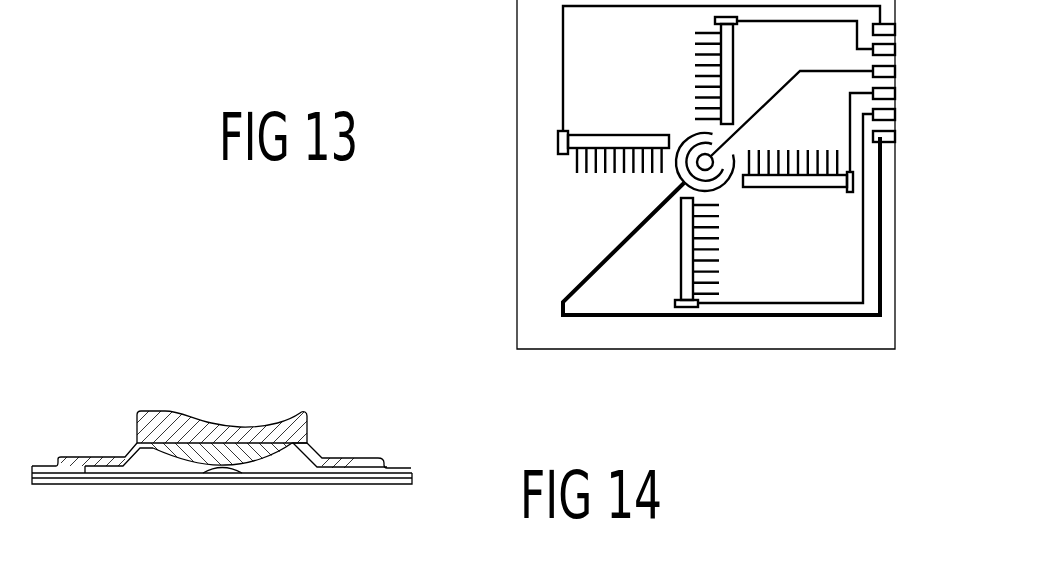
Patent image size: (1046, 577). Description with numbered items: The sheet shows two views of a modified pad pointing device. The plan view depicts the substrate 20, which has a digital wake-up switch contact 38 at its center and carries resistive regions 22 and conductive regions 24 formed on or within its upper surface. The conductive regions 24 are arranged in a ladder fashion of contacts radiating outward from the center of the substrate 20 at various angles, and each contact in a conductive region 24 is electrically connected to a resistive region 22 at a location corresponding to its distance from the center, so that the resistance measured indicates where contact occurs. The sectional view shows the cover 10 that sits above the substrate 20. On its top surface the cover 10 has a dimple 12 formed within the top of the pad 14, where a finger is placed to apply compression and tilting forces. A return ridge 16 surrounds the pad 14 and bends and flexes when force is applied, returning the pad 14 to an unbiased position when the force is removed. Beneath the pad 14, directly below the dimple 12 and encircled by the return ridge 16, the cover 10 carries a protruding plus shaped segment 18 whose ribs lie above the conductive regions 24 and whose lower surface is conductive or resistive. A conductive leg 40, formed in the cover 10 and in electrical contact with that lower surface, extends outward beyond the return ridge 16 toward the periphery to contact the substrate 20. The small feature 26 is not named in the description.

In FIG. 14, the cover 10 is at (63, 457).
In FIG. 14, the dimple 12 is at (180, 417).
In FIG. 14, the pad 14 is at (305, 415).
In FIG. 14, the return ridge 16 is at (317, 452).
In FIG. 14, the protruding plus shaped segment 18 is at (167, 455).
In FIG. 13, the substrate 20 is at (517, 75).
In FIG. 14, the substrate 20 is at (412, 477).
In FIG. 13, the resistive region 22 is at (628, 145).
In FIG. 13, the conductive region 24 is at (577, 163).
In FIG. 14, the dimple 26 is at (222, 472).
In FIG. 13, the digital wake-up switch contact 38 is at (705, 162).
In FIG. 14, the conductive leg 40 is at (339, 475).